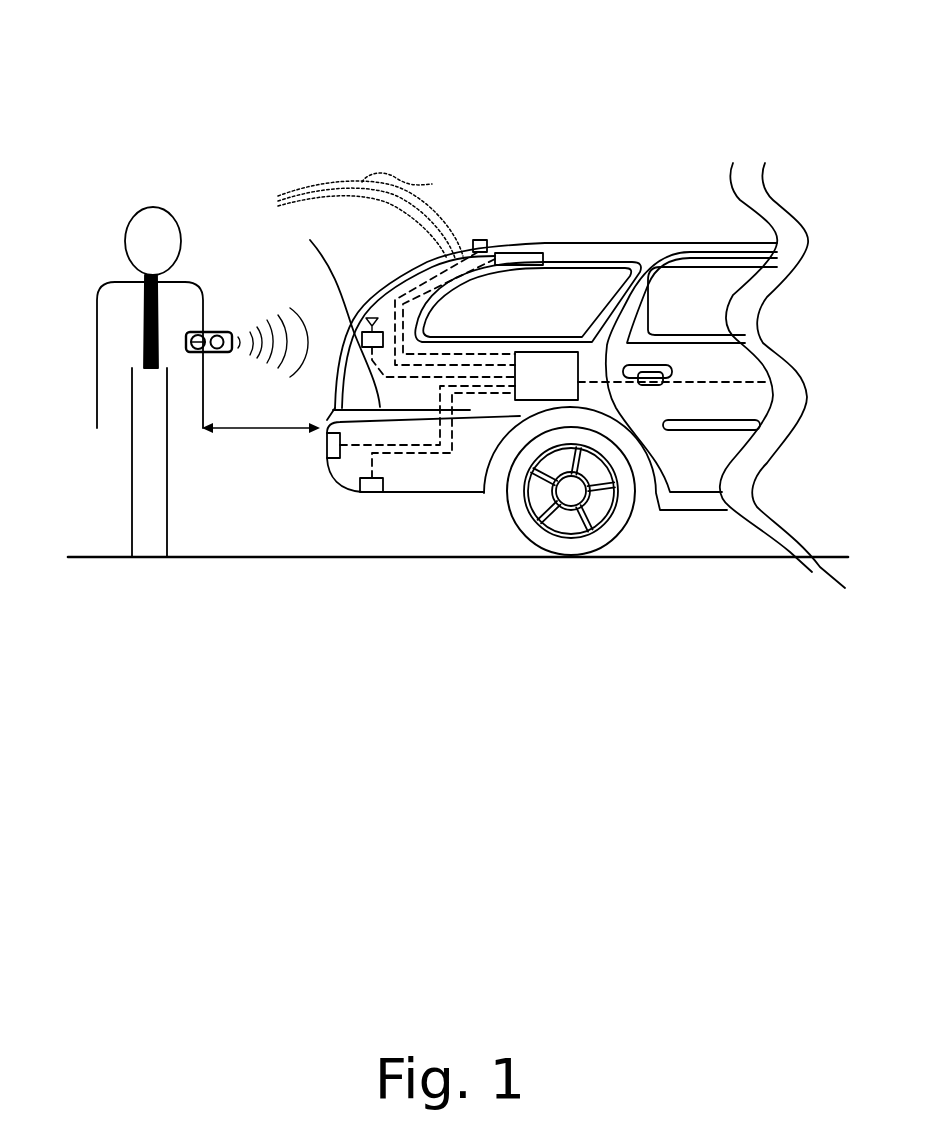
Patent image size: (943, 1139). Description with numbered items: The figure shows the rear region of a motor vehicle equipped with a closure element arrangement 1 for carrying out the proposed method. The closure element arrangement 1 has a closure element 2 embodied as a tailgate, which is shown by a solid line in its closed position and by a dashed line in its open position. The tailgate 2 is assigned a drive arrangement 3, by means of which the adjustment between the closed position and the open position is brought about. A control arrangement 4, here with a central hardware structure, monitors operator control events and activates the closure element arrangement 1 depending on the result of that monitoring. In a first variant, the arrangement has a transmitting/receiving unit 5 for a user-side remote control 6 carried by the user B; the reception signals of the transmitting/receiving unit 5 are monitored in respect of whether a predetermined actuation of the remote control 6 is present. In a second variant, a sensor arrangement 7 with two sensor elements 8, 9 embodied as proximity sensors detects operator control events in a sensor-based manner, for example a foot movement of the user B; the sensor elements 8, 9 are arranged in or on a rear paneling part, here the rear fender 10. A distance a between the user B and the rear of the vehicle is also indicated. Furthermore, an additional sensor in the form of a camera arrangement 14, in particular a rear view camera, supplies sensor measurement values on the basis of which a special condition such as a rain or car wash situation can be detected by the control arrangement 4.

The closure element arrangement 1 is at (345, 133).
The closure element 2 is at (387, 283).
The drive arrangement 3 is at (508, 253).
The control arrangement 4 is at (546, 366).
The transmitting/receiving unit 5 is at (401, 296).
The remote control 6 is at (223, 332).
The sensor arrangement 7 is at (320, 458).
The sensor element 8 is at (355, 488).
The sensor element 9 is at (374, 492).
The rear fender 10 is at (403, 477).
The camera arrangement 14 is at (478, 240).
The user B is at (113, 291).
The distance a is at (261, 411).